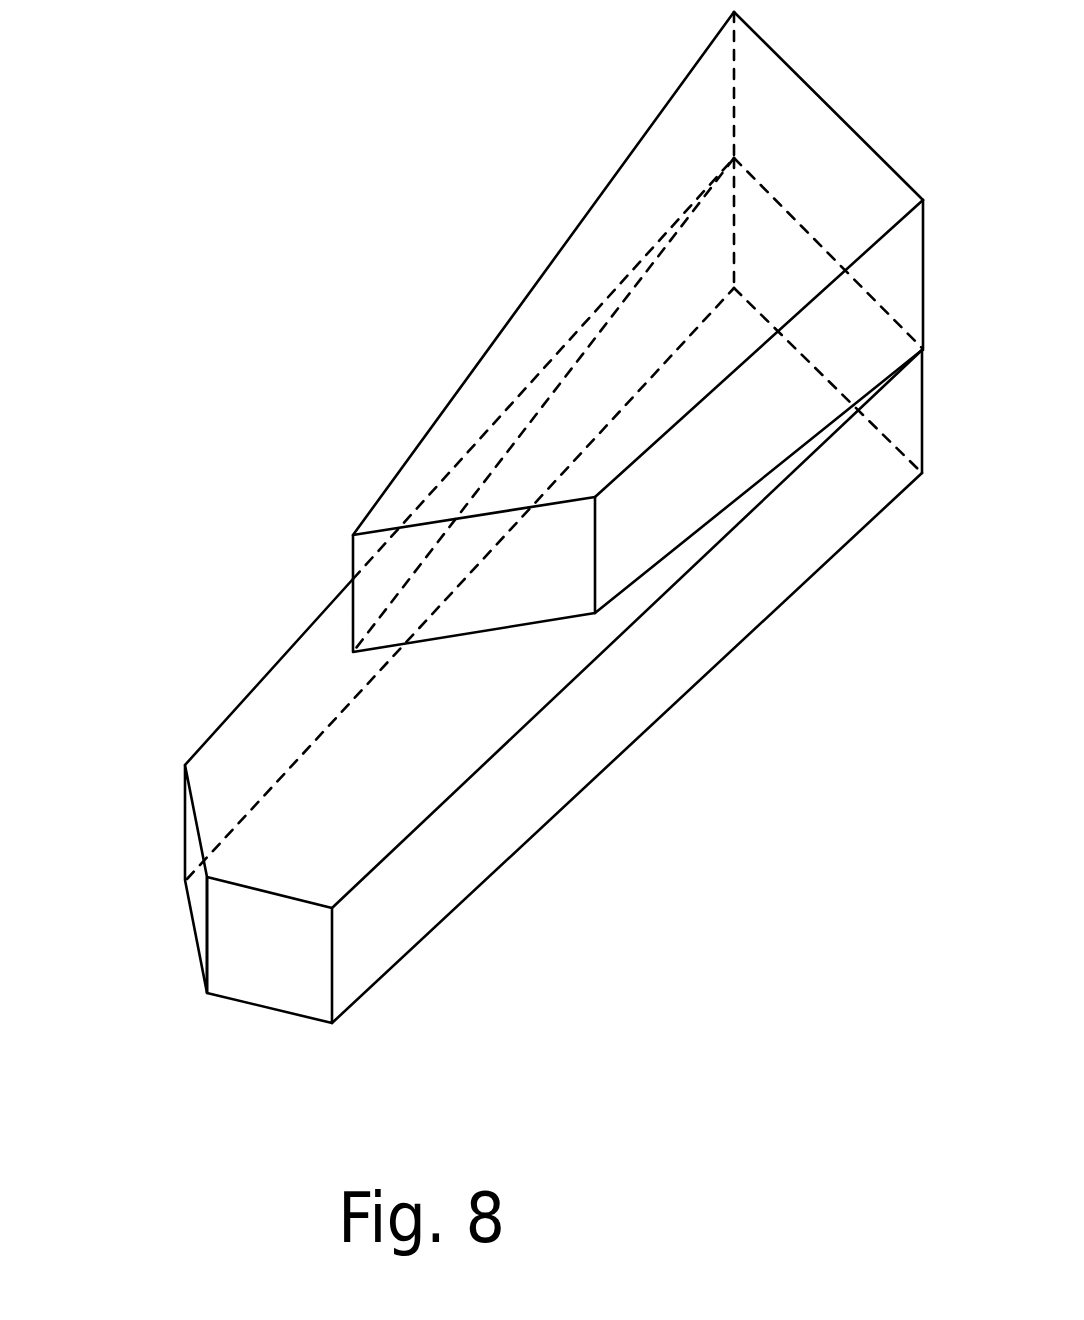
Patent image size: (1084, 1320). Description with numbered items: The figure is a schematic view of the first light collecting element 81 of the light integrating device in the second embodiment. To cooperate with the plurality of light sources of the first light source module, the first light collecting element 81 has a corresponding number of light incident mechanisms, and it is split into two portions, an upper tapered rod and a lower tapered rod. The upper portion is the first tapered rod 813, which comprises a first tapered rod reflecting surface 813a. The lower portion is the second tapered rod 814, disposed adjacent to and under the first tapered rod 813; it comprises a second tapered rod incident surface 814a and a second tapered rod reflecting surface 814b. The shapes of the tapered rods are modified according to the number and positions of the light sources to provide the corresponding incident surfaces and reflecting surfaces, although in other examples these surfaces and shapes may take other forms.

The first light collecting element 81 is at (401, 94).
The first tapered rod 813 is at (530, 332).
The first tapered rod reflecting surface 813a is at (537, 564).
The second tapered rod 814 is at (297, 694).
The second tapered rod incident surface 814a is at (300, 968).
The second tapered rod reflecting surface 814b is at (200, 878).